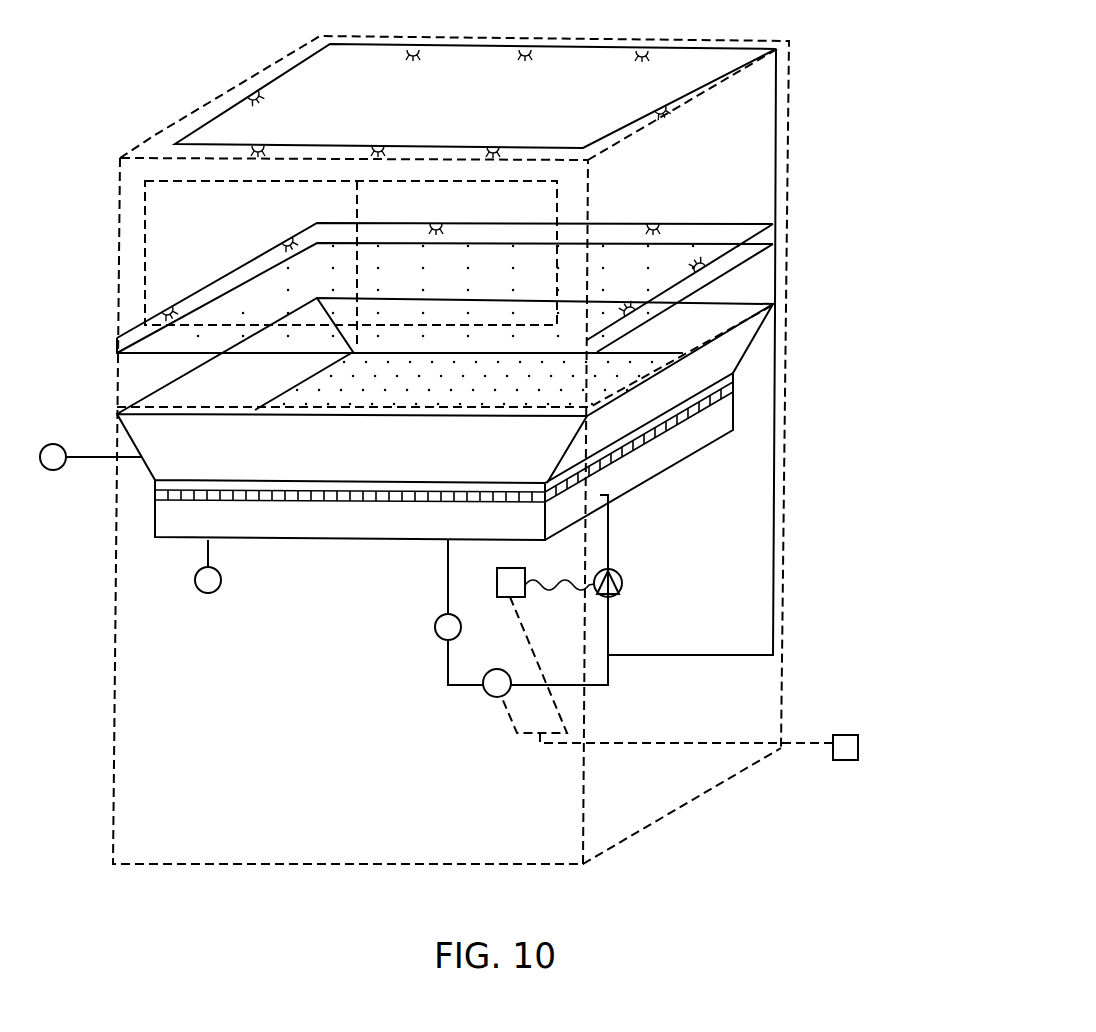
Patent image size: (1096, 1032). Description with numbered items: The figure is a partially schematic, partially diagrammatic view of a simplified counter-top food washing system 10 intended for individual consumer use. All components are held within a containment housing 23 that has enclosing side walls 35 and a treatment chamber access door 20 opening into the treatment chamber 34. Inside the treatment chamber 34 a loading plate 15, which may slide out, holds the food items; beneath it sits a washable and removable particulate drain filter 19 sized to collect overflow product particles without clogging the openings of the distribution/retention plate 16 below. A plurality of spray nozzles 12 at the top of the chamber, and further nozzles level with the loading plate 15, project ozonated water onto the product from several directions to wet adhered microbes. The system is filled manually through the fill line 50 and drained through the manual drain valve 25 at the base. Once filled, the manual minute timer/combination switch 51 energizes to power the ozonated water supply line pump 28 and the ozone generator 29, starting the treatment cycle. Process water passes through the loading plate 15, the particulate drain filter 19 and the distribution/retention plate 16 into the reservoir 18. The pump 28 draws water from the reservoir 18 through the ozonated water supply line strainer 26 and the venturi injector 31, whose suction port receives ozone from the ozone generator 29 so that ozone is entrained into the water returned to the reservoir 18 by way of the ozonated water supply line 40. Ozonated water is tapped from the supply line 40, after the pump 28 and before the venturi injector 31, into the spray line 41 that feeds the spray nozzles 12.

The dust collection system 10 is at (789, 40).
The spray nozzles 12 is at (258, 143).
The loading plate 15 is at (707, 232).
The distribution/retention plate 16 is at (733, 385).
The reservoir 18 is at (735, 420).
The particulate drain filter 19 is at (288, 400).
The treatment chamber access door 20 is at (479, 243).
The containment housing 23 is at (155, 134).
The manual drain valve 25 is at (195, 583).
The ozonated water supply line strainer 26 is at (435, 626).
The ozonated water supply line pump 28 is at (494, 669).
The ozone generator 29 is at (497, 583).
The venturi injector 31 is at (613, 568).
The treatment chamber 34 is at (226, 241).
The enclosing side walls 35 is at (725, 85).
The ozonated water supply line 40 is at (447, 583).
The spray line 41 is at (773, 550).
The fill line 50 is at (102, 457).
The manual minute timer/combination switch 51 is at (858, 743).